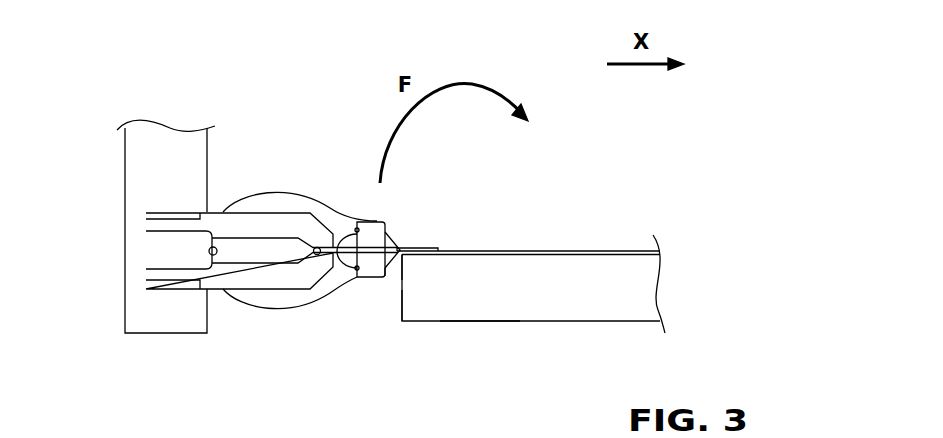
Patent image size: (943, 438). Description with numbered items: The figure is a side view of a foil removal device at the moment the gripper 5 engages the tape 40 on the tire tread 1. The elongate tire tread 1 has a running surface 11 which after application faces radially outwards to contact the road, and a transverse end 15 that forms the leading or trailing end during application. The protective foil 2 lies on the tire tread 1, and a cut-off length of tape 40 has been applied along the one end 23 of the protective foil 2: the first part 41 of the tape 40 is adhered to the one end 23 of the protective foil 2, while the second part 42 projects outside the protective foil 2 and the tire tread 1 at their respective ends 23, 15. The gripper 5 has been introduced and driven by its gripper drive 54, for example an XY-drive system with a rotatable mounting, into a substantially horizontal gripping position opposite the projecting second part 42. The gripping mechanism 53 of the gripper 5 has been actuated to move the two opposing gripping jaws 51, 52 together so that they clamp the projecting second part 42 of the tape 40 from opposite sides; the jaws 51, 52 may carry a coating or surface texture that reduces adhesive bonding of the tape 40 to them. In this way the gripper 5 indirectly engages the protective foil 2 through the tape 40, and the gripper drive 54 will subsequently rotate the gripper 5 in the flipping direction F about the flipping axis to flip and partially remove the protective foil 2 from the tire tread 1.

The tire tread 1 is at (593, 303).
The protective foil 2 is at (600, 250).
The gripper 5 is at (234, 118).
The running surface 11 is at (473, 321).
The end of the tire tread 15 is at (400, 315).
The end of the protective foil 23 is at (405, 262).
The tape 40 is at (417, 246).
The first part of the tape 41 is at (435, 248).
The second part of the tape 42 is at (386, 275).
The gripping jaw 51 is at (373, 240).
The gripping jaw 52 is at (368, 263).
The gripping mechanism 53 is at (238, 228).
The gripper drive 54 is at (140, 185).